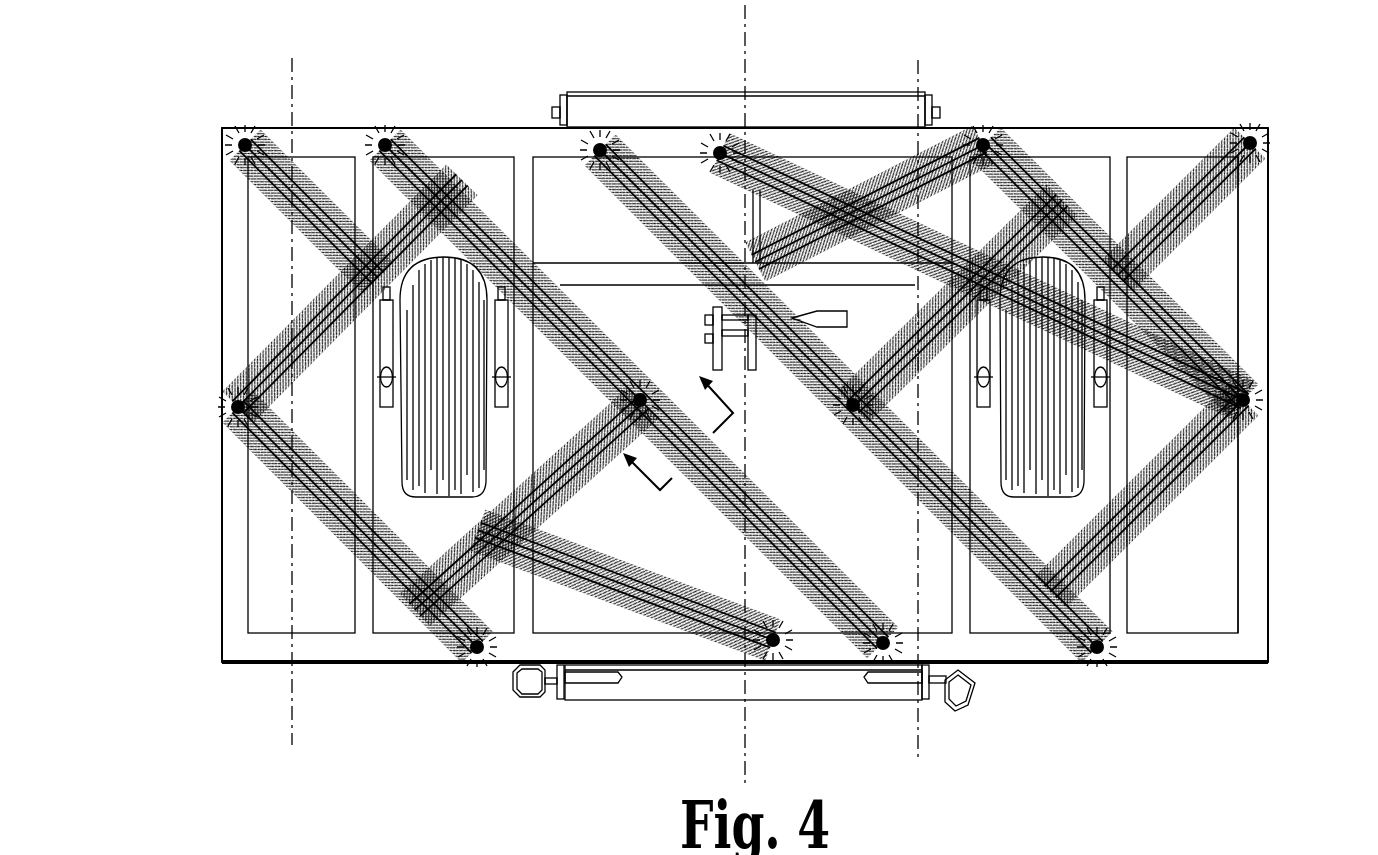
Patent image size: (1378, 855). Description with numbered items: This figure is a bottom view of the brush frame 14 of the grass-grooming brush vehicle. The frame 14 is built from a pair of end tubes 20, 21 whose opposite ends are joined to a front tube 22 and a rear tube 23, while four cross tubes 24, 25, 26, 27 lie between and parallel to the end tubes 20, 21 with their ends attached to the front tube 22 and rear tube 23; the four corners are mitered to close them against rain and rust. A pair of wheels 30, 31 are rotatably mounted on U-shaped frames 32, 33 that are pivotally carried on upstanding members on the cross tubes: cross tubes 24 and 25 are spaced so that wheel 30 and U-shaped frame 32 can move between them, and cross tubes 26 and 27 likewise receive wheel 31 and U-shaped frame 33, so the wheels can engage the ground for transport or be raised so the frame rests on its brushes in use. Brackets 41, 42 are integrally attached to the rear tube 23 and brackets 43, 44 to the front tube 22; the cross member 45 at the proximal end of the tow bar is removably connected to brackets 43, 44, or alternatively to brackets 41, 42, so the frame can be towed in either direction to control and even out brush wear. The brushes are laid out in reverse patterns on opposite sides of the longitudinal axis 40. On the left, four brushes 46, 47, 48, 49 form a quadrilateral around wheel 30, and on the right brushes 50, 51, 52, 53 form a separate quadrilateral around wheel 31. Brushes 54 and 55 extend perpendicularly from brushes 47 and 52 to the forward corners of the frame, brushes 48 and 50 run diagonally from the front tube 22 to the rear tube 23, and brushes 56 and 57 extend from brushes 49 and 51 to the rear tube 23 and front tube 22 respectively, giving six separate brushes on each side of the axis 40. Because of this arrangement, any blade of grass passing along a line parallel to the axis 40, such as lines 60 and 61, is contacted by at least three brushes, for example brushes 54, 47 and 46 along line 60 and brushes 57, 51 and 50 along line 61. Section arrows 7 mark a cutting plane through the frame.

The section line 7- 7 is at (684, 441).
The brush frame 14 is at (235, 618).
The end tube 20 is at (236, 468).
The end tube 21 is at (1268, 466).
The front tube 22 is at (1178, 133).
The rear tube 23 is at (1193, 650).
The cross tube 24 is at (368, 410).
The cross tube 25 is at (530, 400).
The cross tube 26 is at (960, 412).
The cross tube 27 is at (1122, 437).
The wheel 30 is at (442, 486).
The wheel 31 is at (1052, 480).
The U-shaped frame 32 is at (505, 345).
The U-shaped frame 33 is at (1095, 350).
The longitudinal axis 40 is at (745, 727).
The bracket 41 is at (558, 700).
The bracket 42 is at (980, 716).
The bracket 43 is at (560, 105).
The bracket 44 is at (935, 110).
The cross member 45 is at (790, 92).
The brush 46 is at (352, 545).
The brush 47 is at (280, 335).
The brush 48 is at (392, 140).
The brush 49 is at (565, 505).
The brush 50 is at (605, 200).
The brush 51 is at (860, 345).
The brush 52 is at (1250, 340).
The brush 53 is at (1165, 528).
The brush 54 is at (228, 150).
The brush 55 is at (1232, 215).
The brush 56 is at (683, 620).
The brush 57 is at (832, 205).
The line 60 is at (292, 724).
The line 61 is at (918, 742).